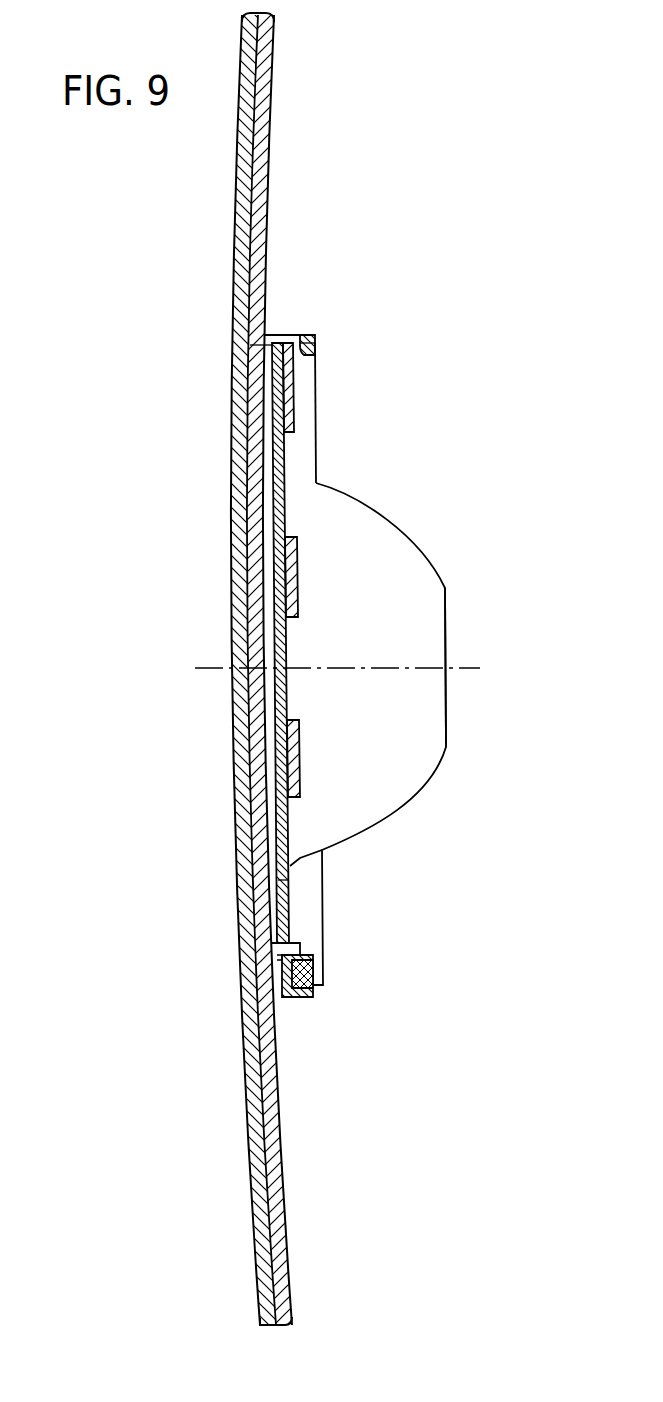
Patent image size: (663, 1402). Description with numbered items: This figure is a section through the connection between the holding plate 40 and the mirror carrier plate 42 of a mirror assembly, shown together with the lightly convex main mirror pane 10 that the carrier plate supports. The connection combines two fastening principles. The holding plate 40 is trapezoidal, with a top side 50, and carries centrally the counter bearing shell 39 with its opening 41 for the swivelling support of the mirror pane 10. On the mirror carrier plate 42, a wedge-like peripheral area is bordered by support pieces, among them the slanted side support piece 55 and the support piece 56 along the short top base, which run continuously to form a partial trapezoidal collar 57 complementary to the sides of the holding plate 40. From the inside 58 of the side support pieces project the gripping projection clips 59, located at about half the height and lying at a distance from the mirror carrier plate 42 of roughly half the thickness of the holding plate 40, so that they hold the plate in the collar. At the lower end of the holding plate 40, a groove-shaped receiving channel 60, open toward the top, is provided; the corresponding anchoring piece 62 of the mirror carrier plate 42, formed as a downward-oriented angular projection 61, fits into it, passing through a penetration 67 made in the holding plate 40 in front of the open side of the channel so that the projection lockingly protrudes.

The mirror pane 10 is at (245, 200).
The mirror carrier plate 42 is at (280, 1122).
The counter bearing shell 39 is at (418, 727).
The holding plate 40 is at (283, 643).
The opening 41 is at (447, 613).
The top side 50 is at (316, 351).
The support piece 55 is at (303, 392).
The support piece 56 is at (306, 343).
The trapezoidal collar 57 is at (315, 428).
The inside of the side support pieces 58 is at (298, 463).
The gripping projection clips 59 is at (290, 380).
The receiving channel 60 is at (296, 988).
The angular projection 61 is at (301, 944).
The anchoring piece 62 is at (296, 970).
The penetration 67 is at (284, 912).